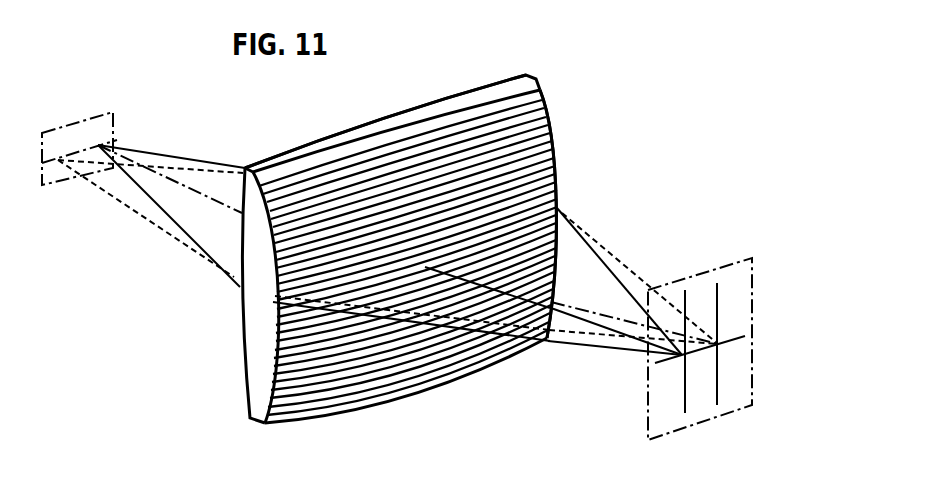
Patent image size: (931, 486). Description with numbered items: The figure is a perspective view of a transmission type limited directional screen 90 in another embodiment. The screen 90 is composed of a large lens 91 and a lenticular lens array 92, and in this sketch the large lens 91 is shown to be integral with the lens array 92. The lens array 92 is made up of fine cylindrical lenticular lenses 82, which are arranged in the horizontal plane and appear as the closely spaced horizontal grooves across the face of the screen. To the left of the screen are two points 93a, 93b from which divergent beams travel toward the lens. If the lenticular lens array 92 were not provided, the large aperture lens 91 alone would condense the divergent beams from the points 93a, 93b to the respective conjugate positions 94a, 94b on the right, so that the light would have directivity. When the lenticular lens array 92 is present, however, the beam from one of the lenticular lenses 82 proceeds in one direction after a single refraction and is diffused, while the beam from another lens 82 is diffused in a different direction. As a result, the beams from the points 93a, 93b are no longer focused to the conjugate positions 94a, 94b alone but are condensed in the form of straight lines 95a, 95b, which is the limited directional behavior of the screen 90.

The transmission type limited directional screen 90 is at (542, 20).
The large lens 91 is at (513, 76).
The lenticular lens array 92 is at (541, 102).
The cylindrical lenticular lens 82 is at (552, 136).
The point 93a is at (58, 158).
The point 93b is at (98, 145).
The conjugate position 94a is at (682, 355).
The conjugate position 94b is at (718, 345).
The straight line 95a is at (687, 295).
The straight line 95b is at (719, 283).